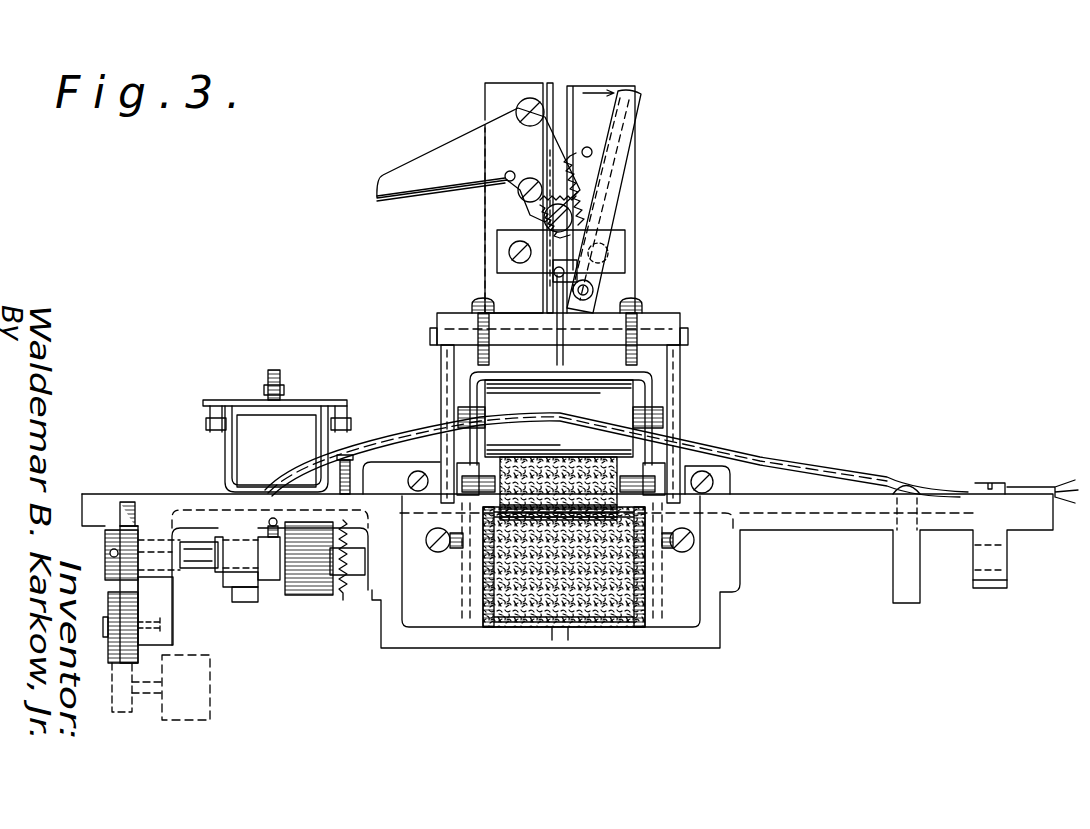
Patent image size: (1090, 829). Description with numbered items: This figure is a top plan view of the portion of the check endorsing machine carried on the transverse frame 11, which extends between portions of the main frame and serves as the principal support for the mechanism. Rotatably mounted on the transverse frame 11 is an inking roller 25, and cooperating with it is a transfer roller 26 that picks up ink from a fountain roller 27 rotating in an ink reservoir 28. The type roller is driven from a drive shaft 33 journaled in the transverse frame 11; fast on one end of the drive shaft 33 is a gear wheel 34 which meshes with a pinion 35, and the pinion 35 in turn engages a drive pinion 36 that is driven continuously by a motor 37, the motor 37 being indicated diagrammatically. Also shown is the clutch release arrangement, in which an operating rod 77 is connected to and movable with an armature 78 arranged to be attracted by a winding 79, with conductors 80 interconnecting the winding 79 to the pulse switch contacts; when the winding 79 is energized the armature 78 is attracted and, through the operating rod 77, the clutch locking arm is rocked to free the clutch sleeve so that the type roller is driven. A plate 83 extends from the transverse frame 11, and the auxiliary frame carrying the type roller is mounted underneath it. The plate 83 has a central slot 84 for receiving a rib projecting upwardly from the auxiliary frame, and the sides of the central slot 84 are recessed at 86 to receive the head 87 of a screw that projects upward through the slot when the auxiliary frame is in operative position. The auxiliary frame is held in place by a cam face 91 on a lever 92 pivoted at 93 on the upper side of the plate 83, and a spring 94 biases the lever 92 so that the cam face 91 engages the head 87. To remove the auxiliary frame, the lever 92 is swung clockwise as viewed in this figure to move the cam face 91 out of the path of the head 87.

The transverse frame 11 is at (205, 448).
The inking roller 25 is at (600, 628).
The transfer roller 26 is at (630, 450).
The fountain roller 27 is at (618, 398).
The ink reservoir 28 is at (662, 397).
The drive shaft 33 is at (202, 570).
The gear wheel 34 is at (118, 540).
The pinion 35 is at (112, 600).
The drive pinion 36 is at (112, 695).
The motor 37 is at (203, 690).
The operating rod 77 is at (275, 385).
The armature 78 is at (240, 400).
The winding 79 is at (290, 415).
The conductors 80 is at (395, 430).
The plate 83 is at (635, 88).
The central slot 84 is at (562, 86).
The recess 86 is at (546, 85).
The head 87 is at (543, 226).
The cam face 91 is at (578, 205).
The lever 92 is at (492, 128).
The pivot 93 is at (527, 100).
The spring 94 is at (518, 190).